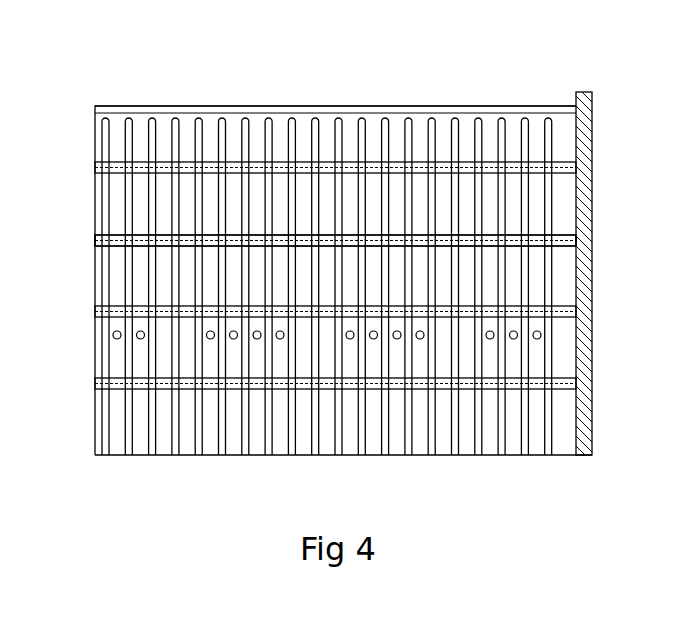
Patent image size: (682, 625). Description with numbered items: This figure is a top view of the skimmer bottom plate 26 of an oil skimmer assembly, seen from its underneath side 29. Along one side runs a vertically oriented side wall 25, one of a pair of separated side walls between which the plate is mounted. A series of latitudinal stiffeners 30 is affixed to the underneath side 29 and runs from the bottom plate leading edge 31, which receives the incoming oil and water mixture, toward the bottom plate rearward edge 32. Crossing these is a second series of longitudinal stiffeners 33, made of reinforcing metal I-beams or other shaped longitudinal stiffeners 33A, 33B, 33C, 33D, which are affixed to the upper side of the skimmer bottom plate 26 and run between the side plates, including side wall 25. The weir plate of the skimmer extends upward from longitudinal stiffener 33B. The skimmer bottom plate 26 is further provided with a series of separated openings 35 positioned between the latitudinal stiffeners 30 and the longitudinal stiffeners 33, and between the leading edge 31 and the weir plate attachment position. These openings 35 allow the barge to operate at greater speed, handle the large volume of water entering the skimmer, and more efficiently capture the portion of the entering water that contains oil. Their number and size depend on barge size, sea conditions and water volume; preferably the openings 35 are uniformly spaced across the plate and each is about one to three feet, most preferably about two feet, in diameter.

The side wall 25 is at (592, 408).
The skimmer bottom plate 26 is at (247, 95).
The underneath side 29 is at (490, 130).
The latitudinal stiffeners 30 is at (525, 118).
The bottom plate leading edge 31 is at (537, 455).
The bottom plate rearward edge 32 is at (355, 106).
The longitudinal stiffeners 33 is at (120, 235).
The longitudinal stiffener 33A is at (565, 378).
The longitudinal stiffener 33B is at (576, 306).
The longitudinal stiffener 33C is at (576, 235).
The longitudinal stiffener 33D is at (576, 163).
The openings 35 is at (117, 339).